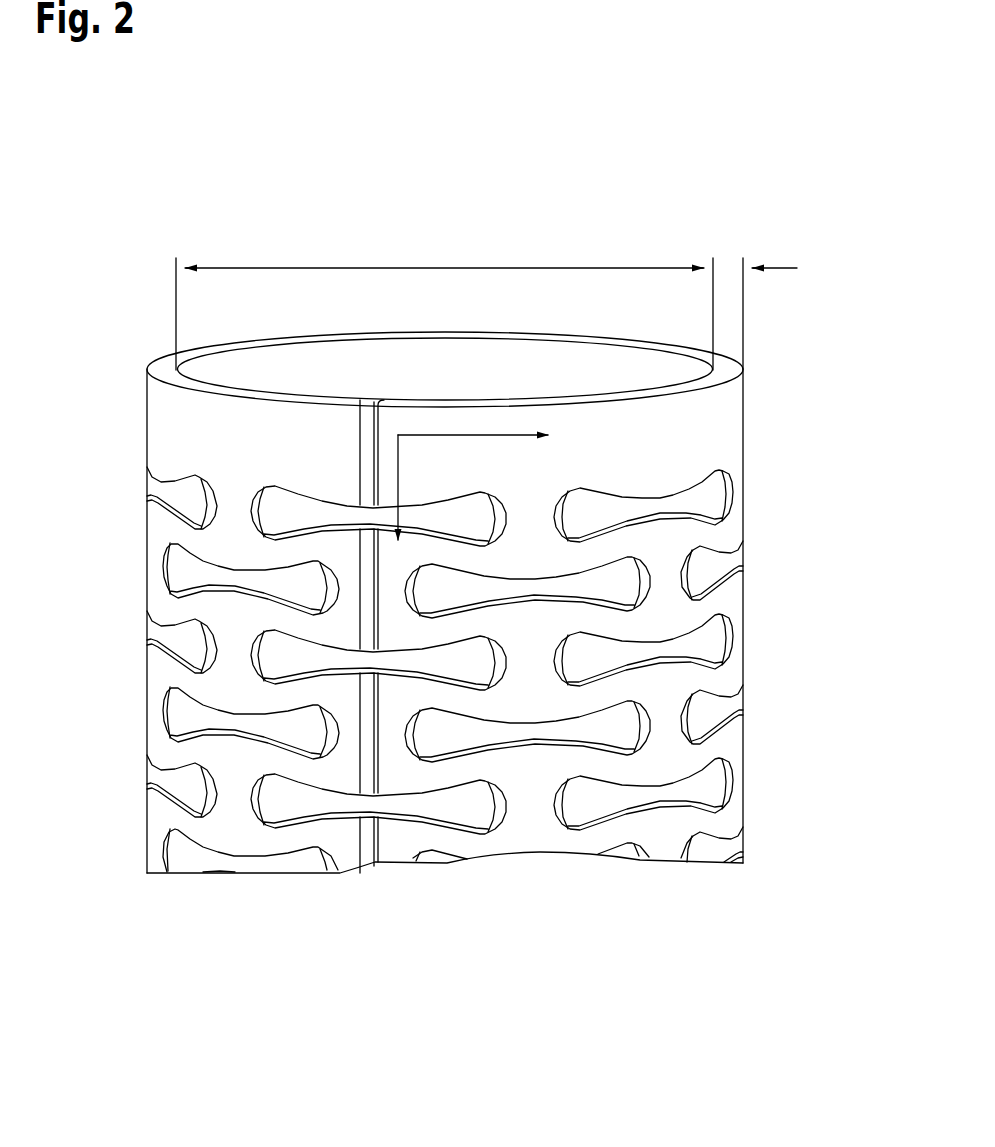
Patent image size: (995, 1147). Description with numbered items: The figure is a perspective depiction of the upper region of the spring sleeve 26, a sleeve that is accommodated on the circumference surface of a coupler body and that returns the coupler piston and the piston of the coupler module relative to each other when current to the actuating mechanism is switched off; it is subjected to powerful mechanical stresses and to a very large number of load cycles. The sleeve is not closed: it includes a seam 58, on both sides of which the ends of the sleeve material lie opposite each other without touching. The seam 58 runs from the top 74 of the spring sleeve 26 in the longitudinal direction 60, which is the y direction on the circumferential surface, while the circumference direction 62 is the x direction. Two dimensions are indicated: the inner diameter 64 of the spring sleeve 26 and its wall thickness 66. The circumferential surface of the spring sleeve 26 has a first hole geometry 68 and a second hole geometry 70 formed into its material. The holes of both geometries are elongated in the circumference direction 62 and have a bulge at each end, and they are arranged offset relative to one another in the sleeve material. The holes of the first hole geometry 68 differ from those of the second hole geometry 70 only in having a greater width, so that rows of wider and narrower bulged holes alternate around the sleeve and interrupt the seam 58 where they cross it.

The spring sleeve 26 is at (519, 381).
The seam 58 is at (366, 400).
The longitudinal direction 60 is at (398, 492).
The circumference direction 62 is at (470, 436).
The inner diameter 64 is at (452, 268).
The wall thickness 66 is at (726, 268).
The first hole geometry 68 is at (693, 787).
The second hole geometry 70 is at (440, 588).
The top of the spring sleeve 74 is at (210, 367).